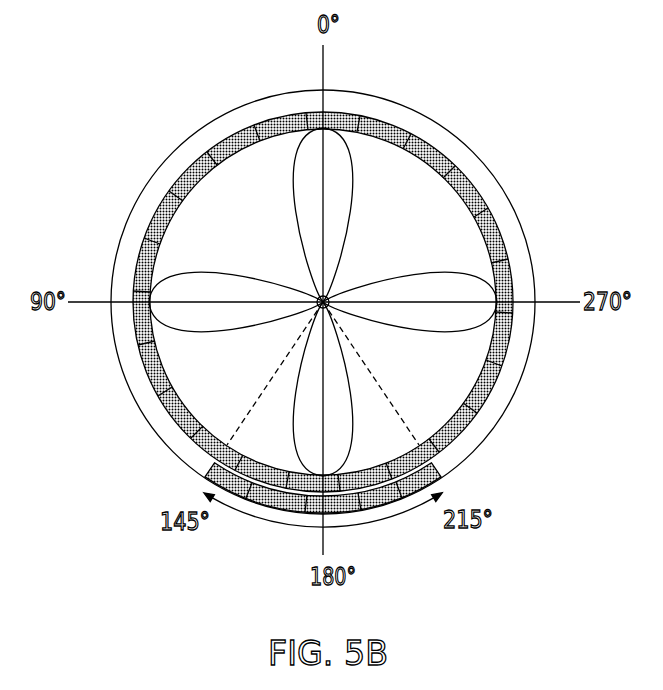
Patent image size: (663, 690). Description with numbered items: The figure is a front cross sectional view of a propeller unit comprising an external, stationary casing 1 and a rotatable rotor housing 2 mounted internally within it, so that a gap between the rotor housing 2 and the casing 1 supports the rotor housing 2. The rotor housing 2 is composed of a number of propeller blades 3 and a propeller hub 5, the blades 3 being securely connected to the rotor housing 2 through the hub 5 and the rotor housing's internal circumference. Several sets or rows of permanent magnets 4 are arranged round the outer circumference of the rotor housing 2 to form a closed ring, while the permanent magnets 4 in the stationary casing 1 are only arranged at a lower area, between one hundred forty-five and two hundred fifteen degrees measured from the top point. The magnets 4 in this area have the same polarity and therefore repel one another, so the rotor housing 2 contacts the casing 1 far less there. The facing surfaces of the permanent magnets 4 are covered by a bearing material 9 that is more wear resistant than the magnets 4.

The external, stationary casing 1 is at (391, 96).
The rotatable rotor housing 2 is at (467, 173).
The propeller blades 3 is at (183, 283).
The permanent magnets 4 is at (501, 229).
The propeller hub 5 is at (317, 297).
The bearing material 9 is at (148, 232).